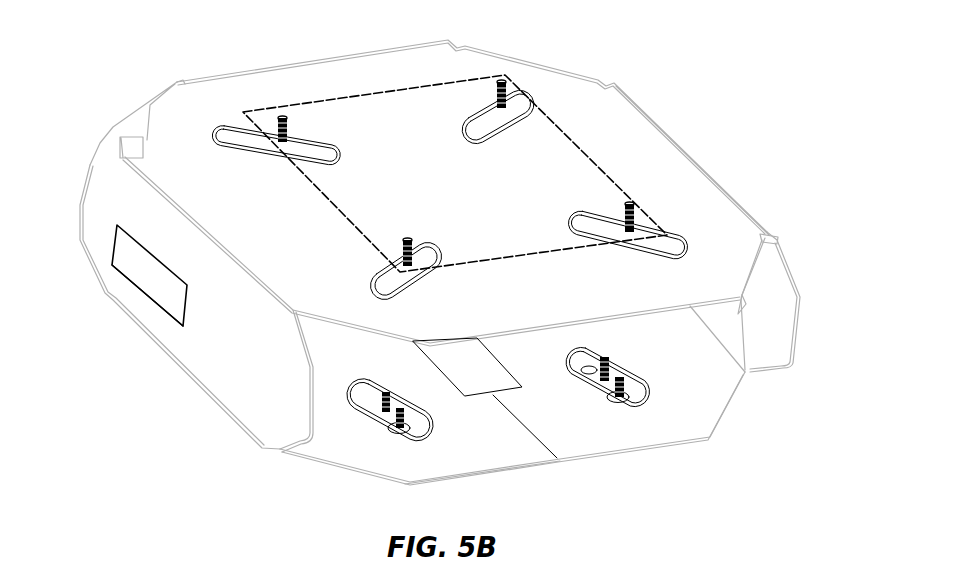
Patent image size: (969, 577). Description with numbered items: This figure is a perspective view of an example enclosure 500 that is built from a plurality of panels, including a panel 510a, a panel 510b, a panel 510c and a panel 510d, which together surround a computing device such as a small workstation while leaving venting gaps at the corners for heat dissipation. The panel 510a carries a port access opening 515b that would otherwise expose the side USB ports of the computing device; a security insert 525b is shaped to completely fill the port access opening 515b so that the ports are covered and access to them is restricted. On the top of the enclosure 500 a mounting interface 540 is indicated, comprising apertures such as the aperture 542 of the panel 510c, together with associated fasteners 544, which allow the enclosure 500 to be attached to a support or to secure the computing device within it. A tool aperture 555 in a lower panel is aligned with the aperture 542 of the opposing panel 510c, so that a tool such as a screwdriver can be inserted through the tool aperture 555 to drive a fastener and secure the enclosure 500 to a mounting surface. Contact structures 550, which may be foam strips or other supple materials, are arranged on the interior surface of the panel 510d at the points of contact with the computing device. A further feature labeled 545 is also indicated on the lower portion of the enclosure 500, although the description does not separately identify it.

The enclosure 500 is at (746, 94).
The panel 510a is at (197, 288).
The panel 510b is at (770, 280).
The panel 510c is at (620, 113).
The panel 510d is at (697, 413).
The port access opening 515b is at (175, 315).
The security insert 525b is at (125, 228).
The mounting interface 540 is at (545, 107).
The aperture 542 is at (602, 231).
The fastener 544 is at (293, 144).
The front bottom edge 545 is at (507, 457).
The contact structures 550 is at (484, 377).
The tool aperture 555 is at (366, 400).